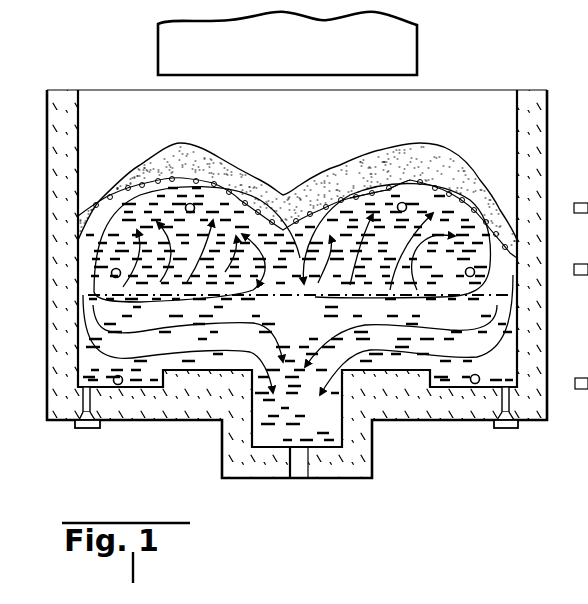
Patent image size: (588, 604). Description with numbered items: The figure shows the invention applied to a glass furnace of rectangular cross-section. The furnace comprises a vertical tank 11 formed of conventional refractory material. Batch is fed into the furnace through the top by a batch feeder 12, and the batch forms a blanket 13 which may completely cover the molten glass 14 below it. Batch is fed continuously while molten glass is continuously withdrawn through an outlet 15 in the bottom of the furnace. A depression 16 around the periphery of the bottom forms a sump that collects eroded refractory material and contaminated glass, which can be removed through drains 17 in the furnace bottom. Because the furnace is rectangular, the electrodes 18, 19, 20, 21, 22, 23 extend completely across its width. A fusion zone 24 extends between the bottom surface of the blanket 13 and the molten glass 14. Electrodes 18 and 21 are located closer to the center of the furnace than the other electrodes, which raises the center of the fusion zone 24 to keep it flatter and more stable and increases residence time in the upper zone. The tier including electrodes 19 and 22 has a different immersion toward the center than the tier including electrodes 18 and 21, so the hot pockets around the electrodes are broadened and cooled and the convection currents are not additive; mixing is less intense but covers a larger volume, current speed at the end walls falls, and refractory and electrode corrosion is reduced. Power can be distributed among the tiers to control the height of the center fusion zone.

The vertical tank 11 is at (550, 115).
The batch feeder 12 is at (398, 43).
The blanket 13 is at (289, 193).
The molten glass 14 is at (314, 306).
The outlet 15 is at (300, 471).
The depression 16 is at (150, 383).
The drains 17 is at (87, 426).
The electrode 18 is at (192, 203).
The electrode 19 is at (111, 274).
The electrode 20 is at (118, 385).
The electrode 21 is at (404, 202).
The electrode 22 is at (475, 272).
The electrode 23 is at (474, 384).
The fusion zone 24 is at (373, 193).